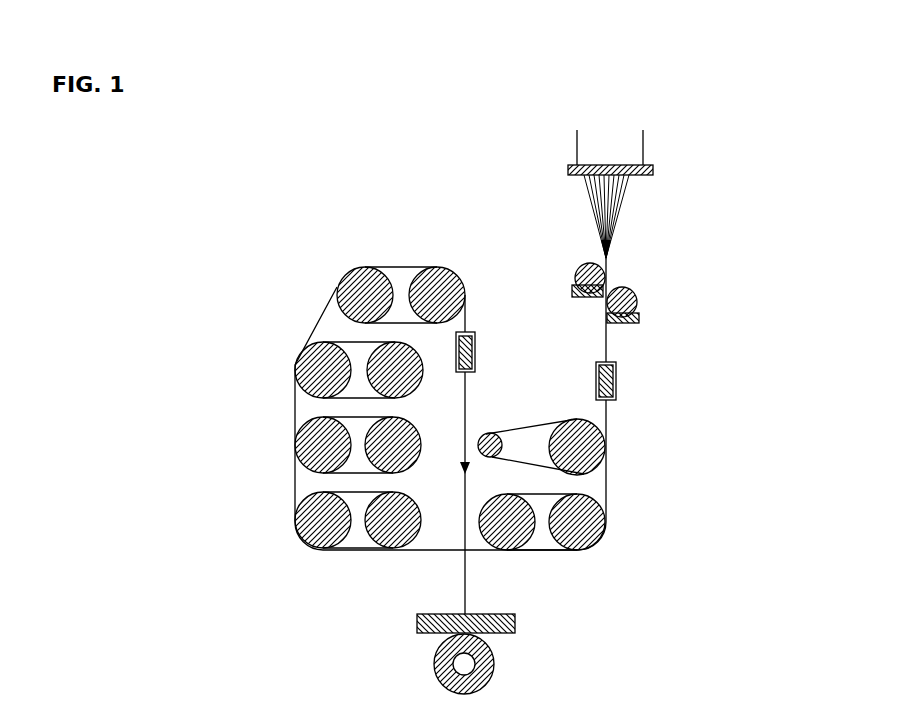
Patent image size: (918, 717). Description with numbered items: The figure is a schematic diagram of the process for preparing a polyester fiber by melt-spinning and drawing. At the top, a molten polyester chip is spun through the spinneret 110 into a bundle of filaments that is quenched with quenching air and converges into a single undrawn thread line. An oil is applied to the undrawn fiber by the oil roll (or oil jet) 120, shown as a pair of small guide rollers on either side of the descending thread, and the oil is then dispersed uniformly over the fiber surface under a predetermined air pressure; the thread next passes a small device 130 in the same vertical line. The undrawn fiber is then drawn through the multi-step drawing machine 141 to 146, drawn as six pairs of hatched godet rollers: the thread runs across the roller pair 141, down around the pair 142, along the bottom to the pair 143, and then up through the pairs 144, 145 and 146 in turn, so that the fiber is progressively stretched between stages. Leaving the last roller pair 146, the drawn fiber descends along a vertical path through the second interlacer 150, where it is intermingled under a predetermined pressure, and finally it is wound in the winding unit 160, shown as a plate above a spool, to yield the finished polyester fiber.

The spinneret 110 is at (610, 195).
The oil roll 120 is at (646, 285).
The first oiling device 130 is at (619, 375).
The multi-step drawing machine 141 is at (611, 455).
The multi-step drawing machine 142 is at (611, 532).
The multi-step drawing machine 143 is at (291, 523).
The multi-step drawing machine 144 is at (291, 449).
The multi-step drawing machine 145 is at (293, 361).
The multi-step drawing machine 146 is at (332, 279).
The second interlacer 150 is at (478, 330).
The winding unit 160 is at (500, 665).